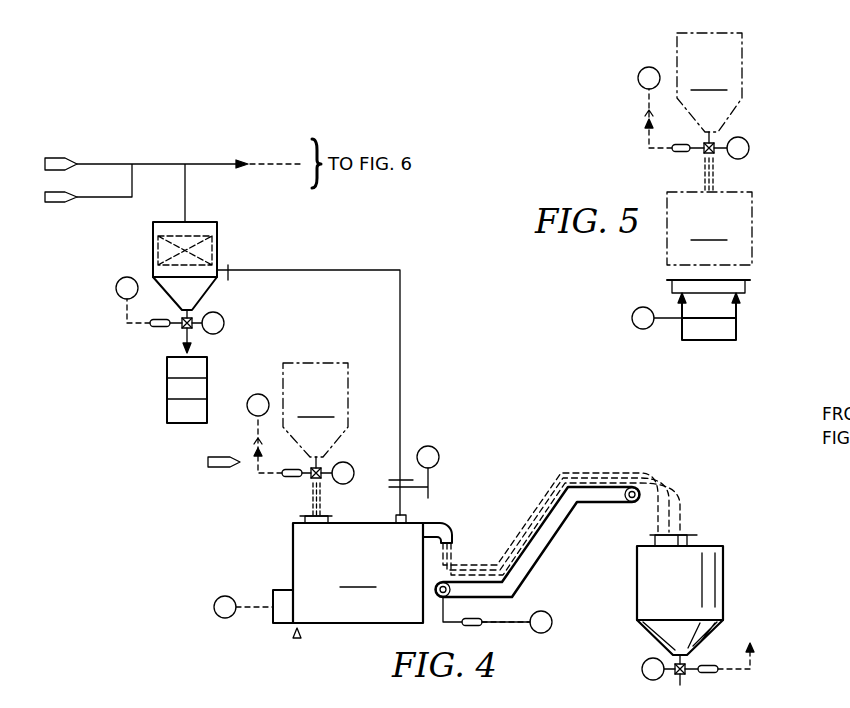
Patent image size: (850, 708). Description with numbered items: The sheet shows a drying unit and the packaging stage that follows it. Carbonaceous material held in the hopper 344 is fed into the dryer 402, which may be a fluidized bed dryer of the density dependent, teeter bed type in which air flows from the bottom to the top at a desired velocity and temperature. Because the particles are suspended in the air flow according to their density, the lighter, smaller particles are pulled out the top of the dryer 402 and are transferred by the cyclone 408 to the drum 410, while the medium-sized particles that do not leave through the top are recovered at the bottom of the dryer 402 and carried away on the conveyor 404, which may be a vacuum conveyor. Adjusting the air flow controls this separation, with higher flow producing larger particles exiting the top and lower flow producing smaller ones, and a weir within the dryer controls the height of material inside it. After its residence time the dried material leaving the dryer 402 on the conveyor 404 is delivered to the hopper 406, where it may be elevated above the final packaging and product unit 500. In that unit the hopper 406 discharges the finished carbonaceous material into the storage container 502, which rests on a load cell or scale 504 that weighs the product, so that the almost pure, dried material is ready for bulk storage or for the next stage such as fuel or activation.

In FIG. 4, the hopper 344 is at (281, 443).
In FIG. 4, the dryer 402 is at (333, 542).
In FIG. 4, the conveyor 404 is at (545, 555).
In FIG. 4, the hopper 406 is at (704, 546).
In FIG. 5, the hopper 406 is at (693, 111).
In FIG. 4, the cyclone 408 is at (153, 250).
In FIG. 4, the drum 410 is at (167, 387).
In FIG. 5, the final packaging and product unit 500 is at (778, 126).
In FIG. 5, the storage container 502 is at (709, 228).
In FIG. 5, the load cell or scale 504 is at (734, 325).